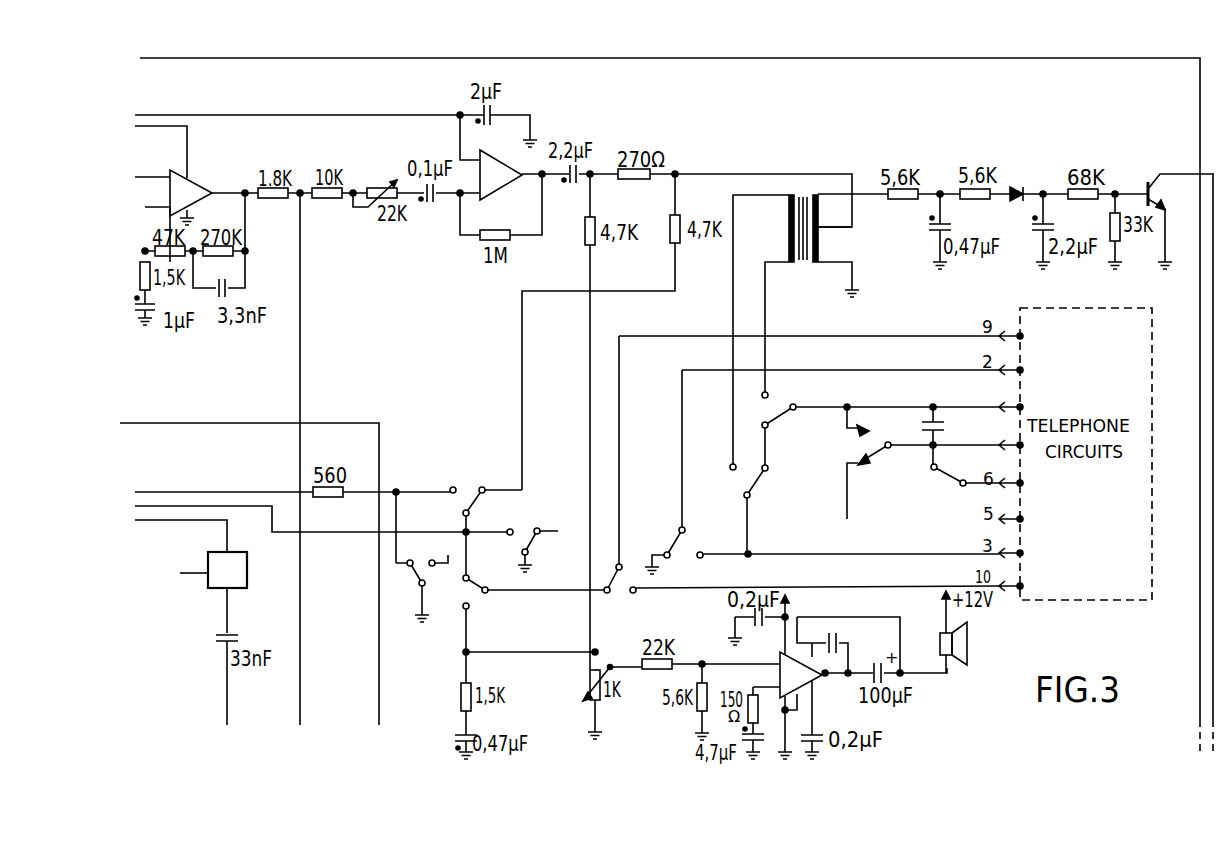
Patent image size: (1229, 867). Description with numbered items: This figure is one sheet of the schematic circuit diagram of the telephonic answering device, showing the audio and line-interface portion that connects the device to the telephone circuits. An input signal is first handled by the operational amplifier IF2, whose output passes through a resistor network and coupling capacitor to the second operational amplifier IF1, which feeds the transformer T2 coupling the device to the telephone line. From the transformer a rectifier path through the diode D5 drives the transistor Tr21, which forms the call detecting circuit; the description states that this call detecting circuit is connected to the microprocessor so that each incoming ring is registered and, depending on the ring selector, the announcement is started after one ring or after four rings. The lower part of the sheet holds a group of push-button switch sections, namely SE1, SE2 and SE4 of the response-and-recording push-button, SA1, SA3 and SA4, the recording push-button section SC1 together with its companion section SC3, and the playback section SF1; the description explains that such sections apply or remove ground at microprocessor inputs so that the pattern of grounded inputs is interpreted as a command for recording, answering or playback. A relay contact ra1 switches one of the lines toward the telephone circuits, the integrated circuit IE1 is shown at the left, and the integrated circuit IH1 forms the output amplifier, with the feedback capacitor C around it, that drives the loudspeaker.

The input operational amplifier IF2 is at (186, 188).
The operational amplifier IF1 is at (499, 177).
The transformer T2 is at (810, 322).
The diode D5 is at (1019, 182).
The call detecting circuit transistor Tr21 is at (1180, 221).
The switch contact SE1 is at (740, 509).
The switch contact SE2 is at (787, 424).
The switch contact SE4 is at (533, 613).
The switch contact SA1 is at (682, 550).
The switch contact SA3 is at (954, 487).
The switch contact SA4 is at (620, 591).
The recording push-button section SC1 is at (424, 588).
The switch contact SC3 is at (475, 531).
The switch contact SF1 is at (525, 550).
The integrated circuit IE1 is at (213, 573).
The audio amplifier integrated circuit IH1 is at (808, 686).
The relay contact ra1 is at (869, 463).
The capacitor C is at (830, 610).